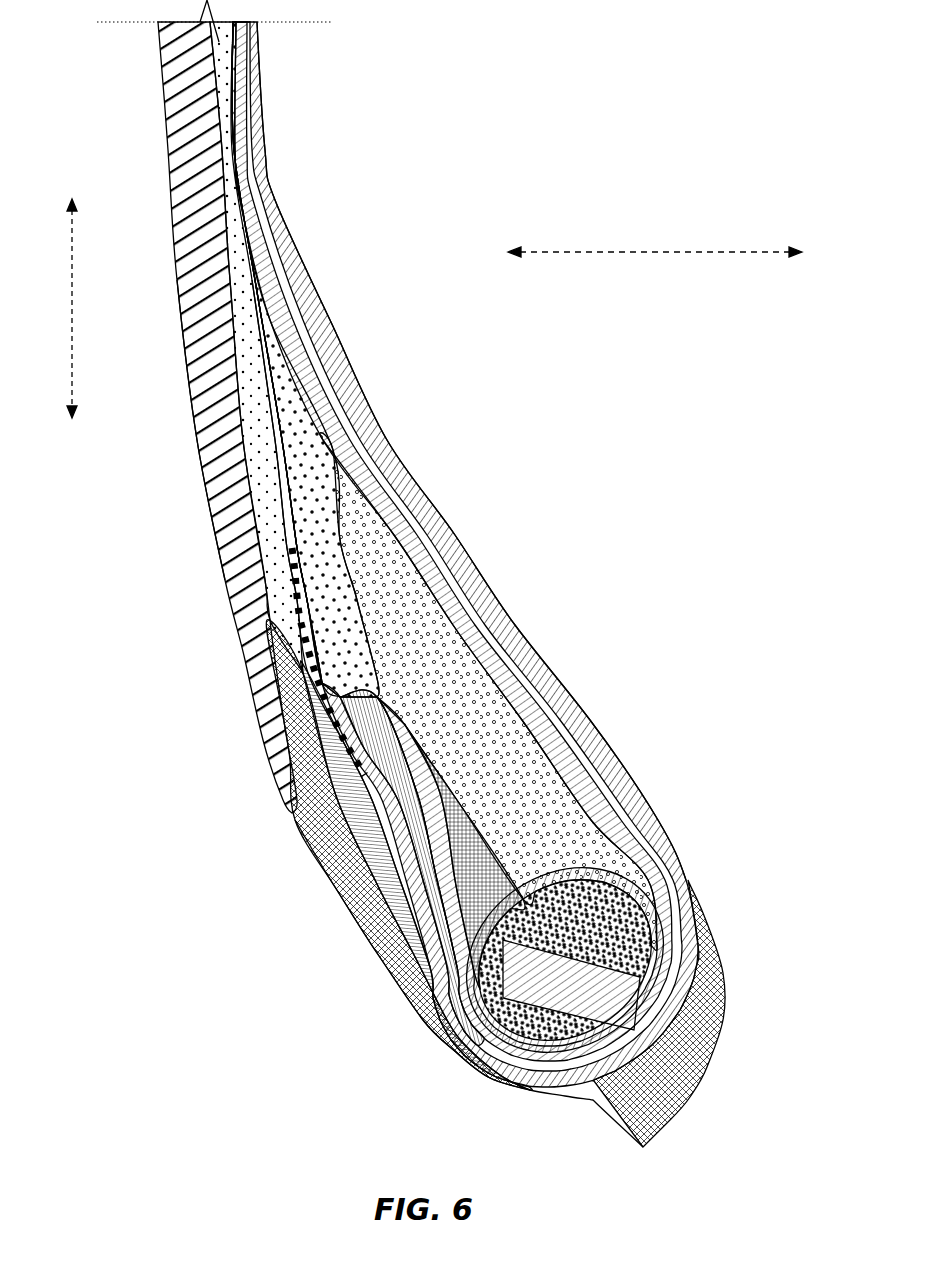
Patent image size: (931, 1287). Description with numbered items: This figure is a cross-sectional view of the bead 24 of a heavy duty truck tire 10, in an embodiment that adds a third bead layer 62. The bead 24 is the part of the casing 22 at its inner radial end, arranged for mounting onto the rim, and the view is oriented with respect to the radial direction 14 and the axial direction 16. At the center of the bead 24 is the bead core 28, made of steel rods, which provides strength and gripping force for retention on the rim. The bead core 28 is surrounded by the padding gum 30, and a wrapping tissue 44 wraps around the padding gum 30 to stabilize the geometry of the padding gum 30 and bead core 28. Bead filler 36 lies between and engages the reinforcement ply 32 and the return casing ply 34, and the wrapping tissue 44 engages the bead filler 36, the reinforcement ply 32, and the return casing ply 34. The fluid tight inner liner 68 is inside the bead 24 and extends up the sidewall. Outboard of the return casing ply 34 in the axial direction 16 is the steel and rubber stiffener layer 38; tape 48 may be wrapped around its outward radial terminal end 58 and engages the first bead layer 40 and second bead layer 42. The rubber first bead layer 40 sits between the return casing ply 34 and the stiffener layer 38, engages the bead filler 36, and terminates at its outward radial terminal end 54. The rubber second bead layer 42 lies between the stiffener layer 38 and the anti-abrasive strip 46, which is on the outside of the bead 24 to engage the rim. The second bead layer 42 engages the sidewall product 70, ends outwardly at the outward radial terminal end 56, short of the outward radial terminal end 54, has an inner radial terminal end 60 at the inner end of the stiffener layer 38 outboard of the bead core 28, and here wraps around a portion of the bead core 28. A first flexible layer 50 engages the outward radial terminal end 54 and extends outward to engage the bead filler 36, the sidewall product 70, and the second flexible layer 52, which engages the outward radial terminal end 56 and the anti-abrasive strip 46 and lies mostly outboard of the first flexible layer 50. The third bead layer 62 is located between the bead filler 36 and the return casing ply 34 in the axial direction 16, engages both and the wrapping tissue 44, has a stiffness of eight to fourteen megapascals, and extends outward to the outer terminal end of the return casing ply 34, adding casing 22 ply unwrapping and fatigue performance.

The tire 10 is at (162, 106).
The radial direction 14 is at (76, 300).
The axial direction 16 is at (683, 250).
The casing 22 is at (274, 158).
The bead 24 is at (525, 632).
The bead core 28 is at (620, 1007).
The padding gum 30 is at (633, 950).
The reinforcement ply 32 is at (620, 815).
The return casing ply 34 is at (440, 885).
The bead filler 36 is at (547, 767).
The stiffener layer 38 is at (393, 853).
The first bead layer 40 is at (355, 813).
The second bead layer 42 is at (385, 820).
The wrapping tissue 44 is at (655, 1003).
The anti-abrasive strip 46 is at (653, 1117).
The tape 48 is at (390, 777).
The first flexible layer 50 is at (333, 593).
The second flexible layer 52 is at (277, 593).
The outward radial terminal end 54 is at (363, 697).
The outward radial terminal end 56 is at (305, 668).
The outward radial terminal end 58 is at (290, 727).
The inner radial terminal end 60 is at (592, 1098).
The third bead layer 62 is at (453, 805).
The inner liner 68 is at (372, 440).
The sidewall product 70 is at (212, 484).